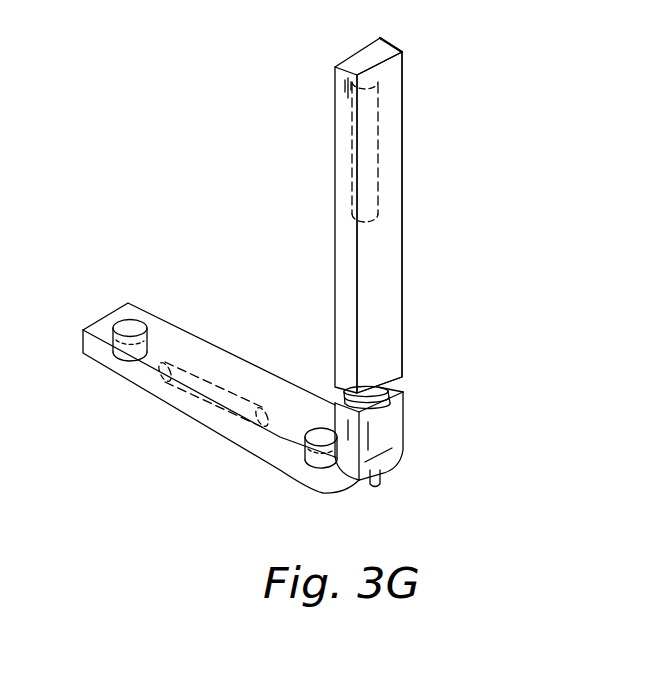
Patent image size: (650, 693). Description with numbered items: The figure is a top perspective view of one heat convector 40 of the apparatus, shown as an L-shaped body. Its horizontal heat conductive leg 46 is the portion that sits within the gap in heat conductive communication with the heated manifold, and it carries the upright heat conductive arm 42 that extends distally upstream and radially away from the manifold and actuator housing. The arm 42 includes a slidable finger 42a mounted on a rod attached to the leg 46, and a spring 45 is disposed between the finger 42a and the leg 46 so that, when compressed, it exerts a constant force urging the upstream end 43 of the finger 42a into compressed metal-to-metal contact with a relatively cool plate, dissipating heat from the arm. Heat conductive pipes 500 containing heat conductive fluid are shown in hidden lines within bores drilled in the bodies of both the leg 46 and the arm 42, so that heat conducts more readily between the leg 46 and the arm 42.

The heat convector 40 is at (214, 162).
The heat conductive arm 42 is at (405, 178).
The finger 42a is at (401, 88).
The upstream end 43 is at (367, 50).
The spring 45 is at (388, 388).
The heat conductive leg 46 is at (118, 373).
The heat conductive pipes 500 is at (352, 149).